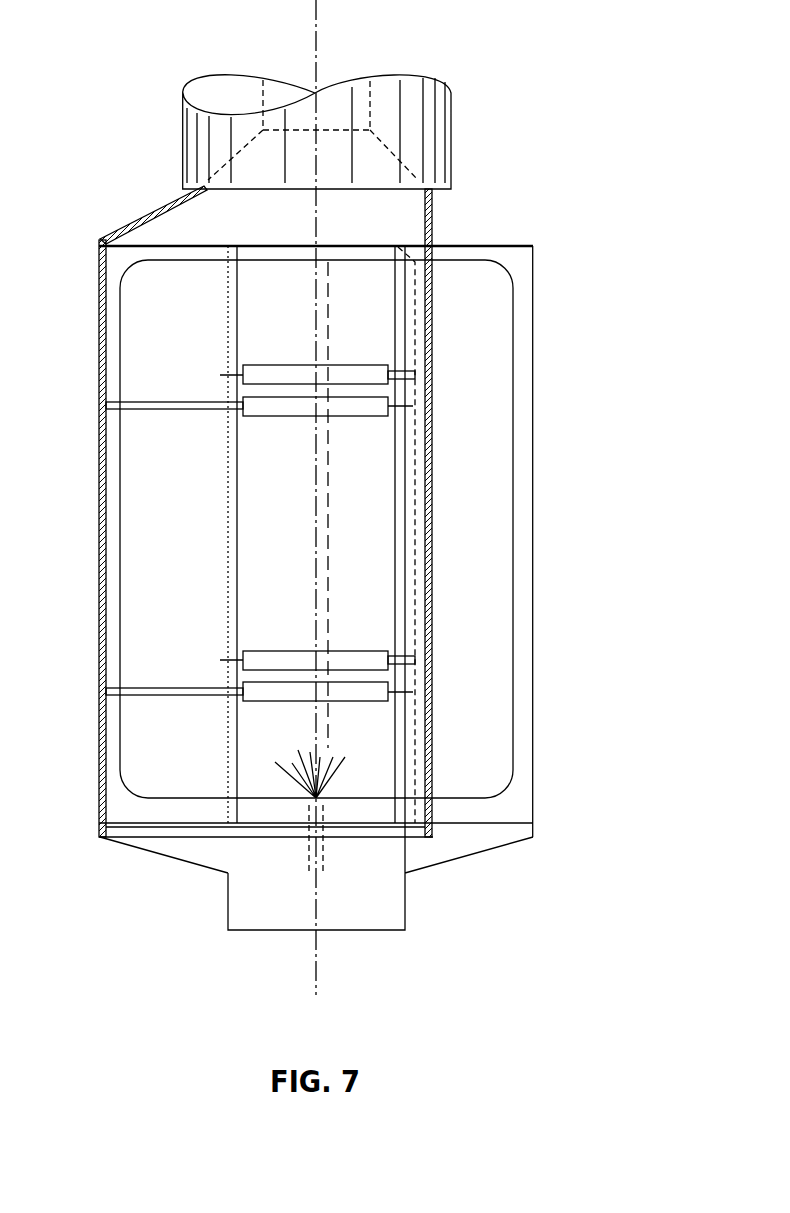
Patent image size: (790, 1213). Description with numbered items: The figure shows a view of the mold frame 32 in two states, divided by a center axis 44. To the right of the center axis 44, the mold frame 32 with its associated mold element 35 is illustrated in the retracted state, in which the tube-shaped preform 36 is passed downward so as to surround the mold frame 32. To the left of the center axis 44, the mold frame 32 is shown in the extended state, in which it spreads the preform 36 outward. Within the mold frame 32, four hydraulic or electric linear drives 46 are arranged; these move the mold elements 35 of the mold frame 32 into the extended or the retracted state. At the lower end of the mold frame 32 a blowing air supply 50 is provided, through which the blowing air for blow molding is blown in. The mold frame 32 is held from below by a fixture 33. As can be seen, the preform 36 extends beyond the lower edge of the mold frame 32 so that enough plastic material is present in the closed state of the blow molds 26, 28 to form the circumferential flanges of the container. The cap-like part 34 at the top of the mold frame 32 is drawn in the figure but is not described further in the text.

The center axis 44 is at (318, 38).
The upper cylindrical cap 34 is at (452, 127).
The preform 36 is at (130, 228).
The blow mold 26 is at (183, 253).
The blow mold 28 is at (508, 253).
The mold element 35 is at (112, 332).
The mold frame 32 is at (380, 552).
The linear drive 46 is at (277, 377).
The fixture 33 is at (387, 900).
The blowing air supply 50 is at (310, 805).